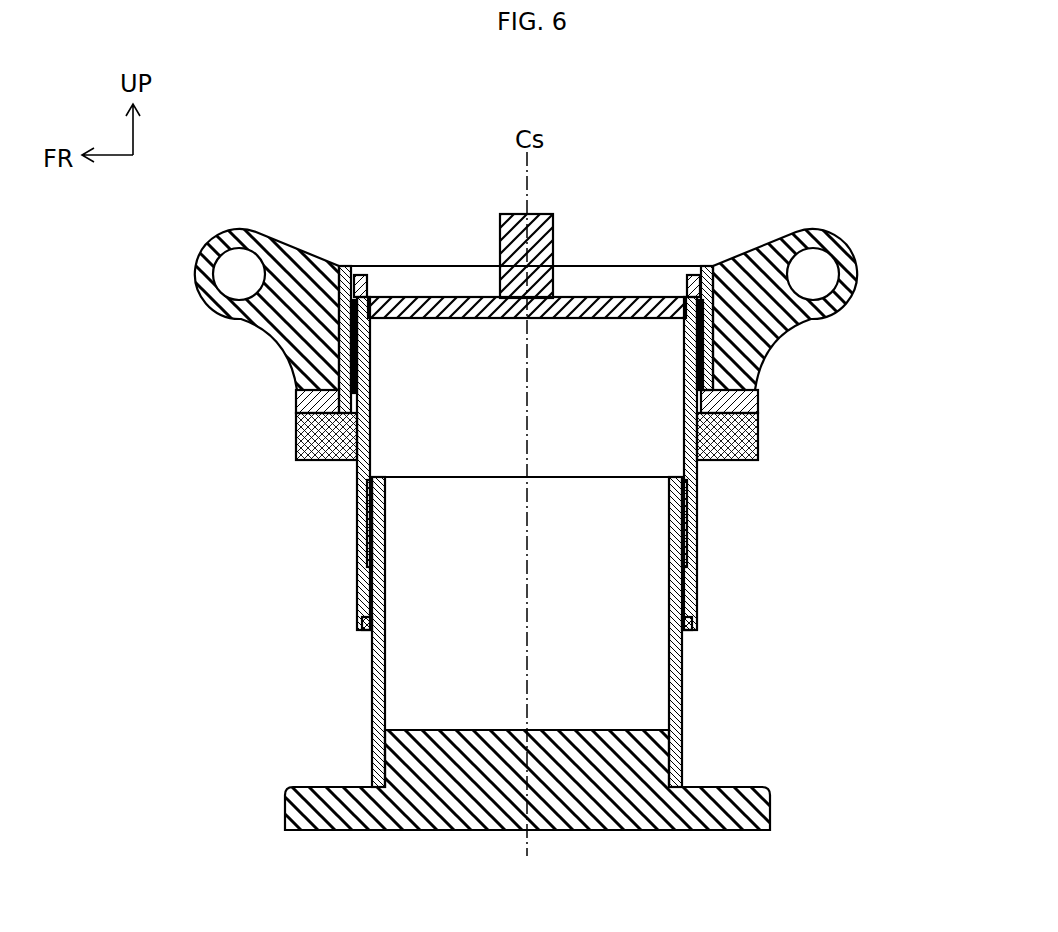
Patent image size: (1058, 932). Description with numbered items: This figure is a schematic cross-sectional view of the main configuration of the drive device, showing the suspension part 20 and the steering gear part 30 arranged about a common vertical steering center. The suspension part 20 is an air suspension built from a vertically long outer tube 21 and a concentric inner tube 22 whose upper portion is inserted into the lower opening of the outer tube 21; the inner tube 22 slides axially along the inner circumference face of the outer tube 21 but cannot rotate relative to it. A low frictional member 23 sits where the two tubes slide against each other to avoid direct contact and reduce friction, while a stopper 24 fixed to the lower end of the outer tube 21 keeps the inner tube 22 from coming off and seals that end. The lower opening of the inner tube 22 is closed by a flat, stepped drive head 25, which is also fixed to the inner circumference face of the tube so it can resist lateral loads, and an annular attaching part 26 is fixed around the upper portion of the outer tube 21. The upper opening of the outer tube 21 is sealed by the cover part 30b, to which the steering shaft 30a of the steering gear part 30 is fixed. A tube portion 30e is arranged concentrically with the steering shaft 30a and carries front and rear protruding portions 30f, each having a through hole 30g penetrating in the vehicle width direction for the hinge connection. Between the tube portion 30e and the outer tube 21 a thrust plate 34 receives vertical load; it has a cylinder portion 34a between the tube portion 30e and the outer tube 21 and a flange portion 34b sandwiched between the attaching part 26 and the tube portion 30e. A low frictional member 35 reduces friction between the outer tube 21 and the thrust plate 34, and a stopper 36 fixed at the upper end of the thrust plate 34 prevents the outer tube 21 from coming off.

The suspension part 20 is at (509, 563).
The outer tube 21 is at (358, 495).
The inner tube 22 is at (373, 658).
The low frictional member 23 is at (360, 542).
The stopper 24 is at (360, 623).
The drive head 25 is at (760, 812).
The attaching part 26 is at (747, 452).
The steering gear part 30 is at (523, 283).
The steering shaft 30a is at (502, 228).
The cover part 30b is at (597, 300).
The tube portion 30e is at (310, 378).
The protruding portion 30f is at (234, 238).
The through hole 30g is at (210, 273).
The thrust plate 34 is at (832, 345).
The cylinder portion 34a is at (715, 352).
The flange portion 34b is at (760, 400).
The low frictional member 35 is at (368, 352).
The stopper 36 is at (690, 275).